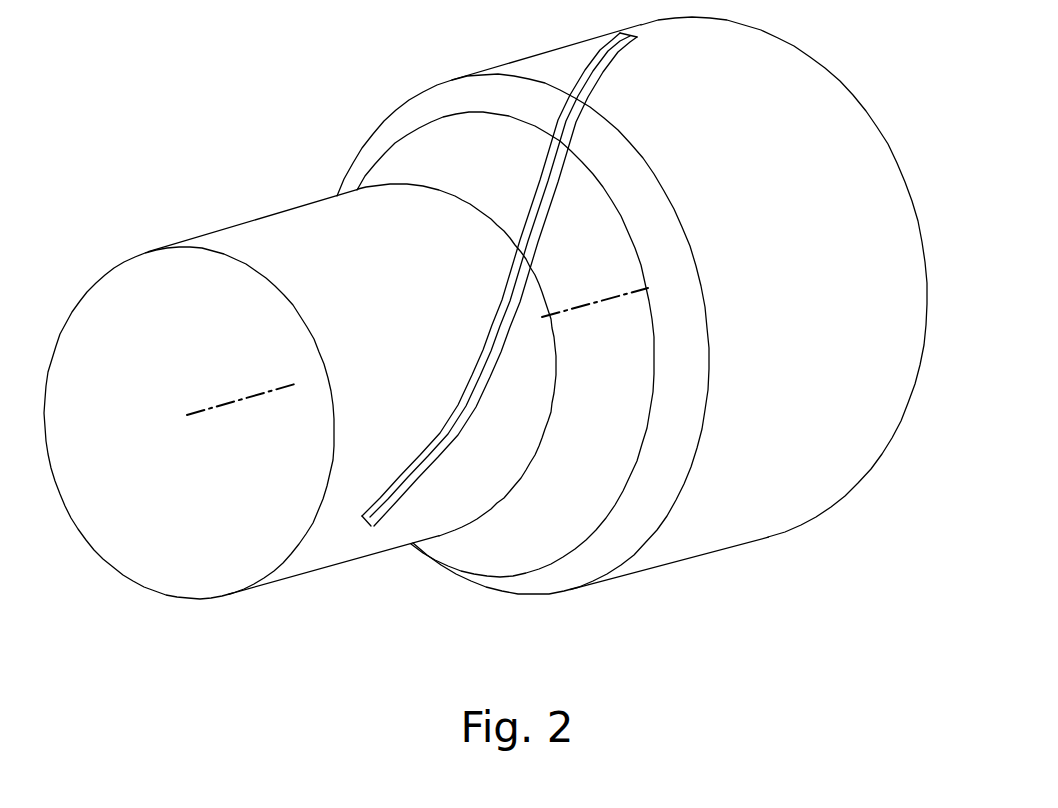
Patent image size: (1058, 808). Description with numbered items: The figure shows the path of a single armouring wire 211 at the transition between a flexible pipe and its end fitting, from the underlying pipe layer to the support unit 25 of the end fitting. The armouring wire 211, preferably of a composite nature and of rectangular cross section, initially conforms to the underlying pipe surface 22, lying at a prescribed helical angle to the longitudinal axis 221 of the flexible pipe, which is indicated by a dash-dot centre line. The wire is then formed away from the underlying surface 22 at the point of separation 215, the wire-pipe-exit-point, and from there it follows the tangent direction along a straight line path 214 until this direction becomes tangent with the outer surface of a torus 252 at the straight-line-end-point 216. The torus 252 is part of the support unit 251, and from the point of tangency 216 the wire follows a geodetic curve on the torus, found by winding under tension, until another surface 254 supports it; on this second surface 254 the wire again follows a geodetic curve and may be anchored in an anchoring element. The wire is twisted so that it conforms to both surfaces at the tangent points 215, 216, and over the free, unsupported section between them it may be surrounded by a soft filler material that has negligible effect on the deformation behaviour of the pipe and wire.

The underlying pipe surface 22 is at (267, 258).
The longitudinal axis 221 is at (227, 408).
The hub 25 is at (610, 334).
The support unit 251 is at (558, 497).
The torus 252 is at (635, 508).
The second surface 254 is at (738, 408).
The armouring wire 211 is at (366, 520).
The straight line path 214 is at (532, 220).
The point of separation 215 is at (492, 360).
The straight-line-end-point 216 is at (557, 118).